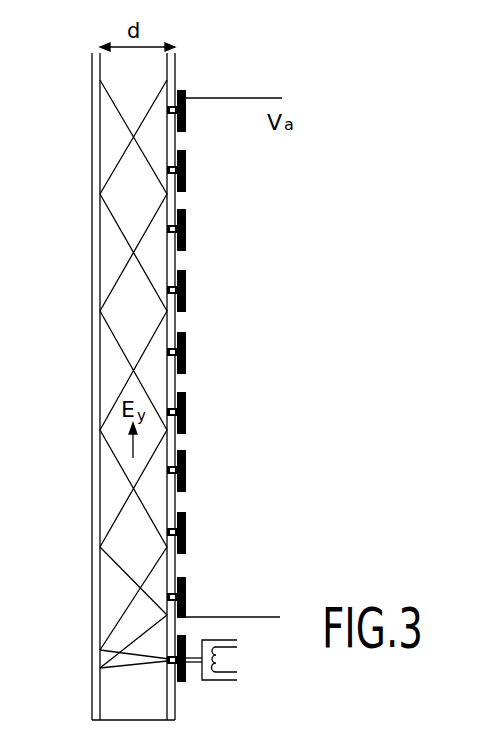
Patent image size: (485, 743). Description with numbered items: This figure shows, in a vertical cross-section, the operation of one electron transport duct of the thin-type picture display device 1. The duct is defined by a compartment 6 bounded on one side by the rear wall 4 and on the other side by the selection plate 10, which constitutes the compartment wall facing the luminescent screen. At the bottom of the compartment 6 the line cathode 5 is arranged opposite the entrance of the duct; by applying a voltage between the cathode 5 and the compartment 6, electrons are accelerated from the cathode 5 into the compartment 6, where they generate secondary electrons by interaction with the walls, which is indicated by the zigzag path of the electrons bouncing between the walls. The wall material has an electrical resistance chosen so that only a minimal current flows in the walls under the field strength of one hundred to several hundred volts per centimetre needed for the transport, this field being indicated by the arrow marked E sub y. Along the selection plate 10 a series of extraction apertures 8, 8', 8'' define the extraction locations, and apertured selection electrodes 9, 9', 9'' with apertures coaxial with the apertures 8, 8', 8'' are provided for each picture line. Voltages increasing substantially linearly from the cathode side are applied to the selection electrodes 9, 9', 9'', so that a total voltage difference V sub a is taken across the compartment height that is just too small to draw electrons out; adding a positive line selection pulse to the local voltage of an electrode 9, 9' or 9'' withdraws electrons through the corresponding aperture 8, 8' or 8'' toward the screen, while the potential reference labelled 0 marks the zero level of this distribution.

The picture display device 1 is at (122, 546).
The rear wall 4 is at (92, 368).
The line cathode 5 is at (220, 682).
The compartment 6 is at (84, 163).
The extraction aperture 8 is at (197, 602).
The extraction aperture 8' is at (197, 537).
The extraction aperture 8'' is at (199, 470).
The selection electrode 9 is at (202, 591).
The selection electrode 9' is at (202, 528).
The selection electrode 9'' is at (204, 455).
The selection plate 10 is at (177, 74).
The zero potential line 0 is at (240, 619).